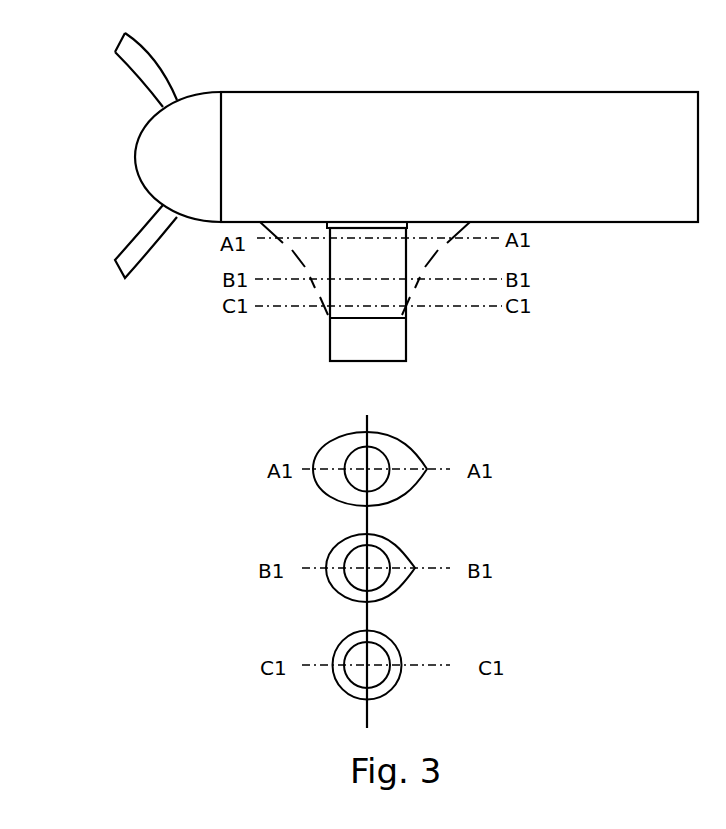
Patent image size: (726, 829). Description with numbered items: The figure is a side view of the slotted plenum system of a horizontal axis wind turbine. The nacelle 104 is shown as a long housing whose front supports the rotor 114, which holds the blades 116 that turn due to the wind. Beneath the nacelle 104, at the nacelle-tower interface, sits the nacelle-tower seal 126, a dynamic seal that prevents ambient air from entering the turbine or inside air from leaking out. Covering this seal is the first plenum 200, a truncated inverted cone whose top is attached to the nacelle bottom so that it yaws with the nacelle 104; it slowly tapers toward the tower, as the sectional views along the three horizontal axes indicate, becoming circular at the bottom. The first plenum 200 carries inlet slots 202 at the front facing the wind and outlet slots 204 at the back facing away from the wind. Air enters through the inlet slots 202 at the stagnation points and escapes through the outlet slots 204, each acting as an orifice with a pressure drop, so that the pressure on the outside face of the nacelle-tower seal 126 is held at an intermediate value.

The nacelle 104 is at (627, 232).
The rotor 114 is at (127, 181).
The blades 116 is at (155, 263).
The nacelle-tower seal 126 is at (384, 212).
The first plenum 200 is at (358, 330).
The inlet slots 202 is at (285, 258).
The outlet slots 204 is at (453, 262).